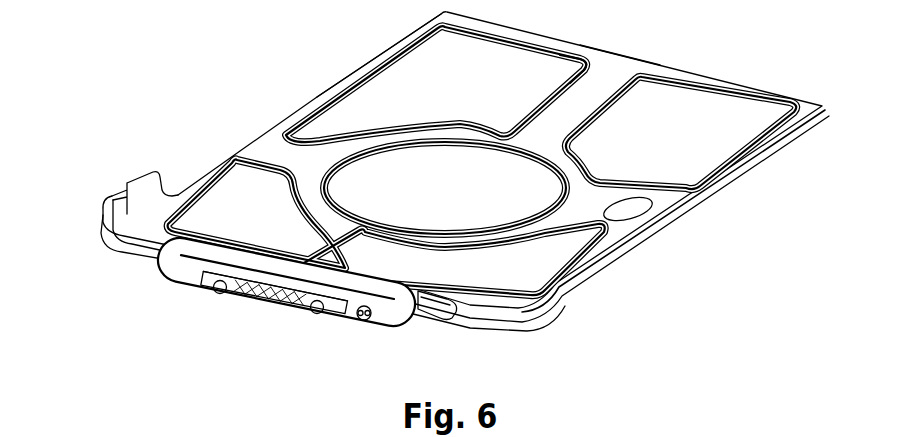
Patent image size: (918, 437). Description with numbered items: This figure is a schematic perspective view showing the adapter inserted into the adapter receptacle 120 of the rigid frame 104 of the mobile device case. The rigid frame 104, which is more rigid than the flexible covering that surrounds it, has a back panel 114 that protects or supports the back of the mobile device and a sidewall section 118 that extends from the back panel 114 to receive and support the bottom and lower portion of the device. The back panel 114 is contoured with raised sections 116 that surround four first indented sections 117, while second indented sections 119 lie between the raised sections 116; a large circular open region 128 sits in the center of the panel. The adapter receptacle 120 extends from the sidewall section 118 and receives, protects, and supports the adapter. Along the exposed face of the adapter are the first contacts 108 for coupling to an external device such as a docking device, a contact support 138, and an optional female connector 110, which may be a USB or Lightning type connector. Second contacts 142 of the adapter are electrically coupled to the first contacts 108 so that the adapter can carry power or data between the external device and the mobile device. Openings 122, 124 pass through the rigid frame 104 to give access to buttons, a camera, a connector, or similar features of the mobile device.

The rigid frame 104 is at (267, 153).
The first contacts 108 is at (243, 298).
The female connector 110 is at (372, 328).
The back panel 114 is at (336, 82).
The raised sections 116 is at (588, 57).
The first indented sections 117 is at (505, 279).
The sidewall section 118 is at (123, 192).
The second indented sections 119 is at (610, 72).
The adapter receptacle 120 is at (163, 272).
The opening 122 is at (447, 313).
The opening 124 is at (621, 213).
The open region 128 is at (423, 201).
The contact support 138 is at (300, 316).
The second contacts 142 is at (320, 317).